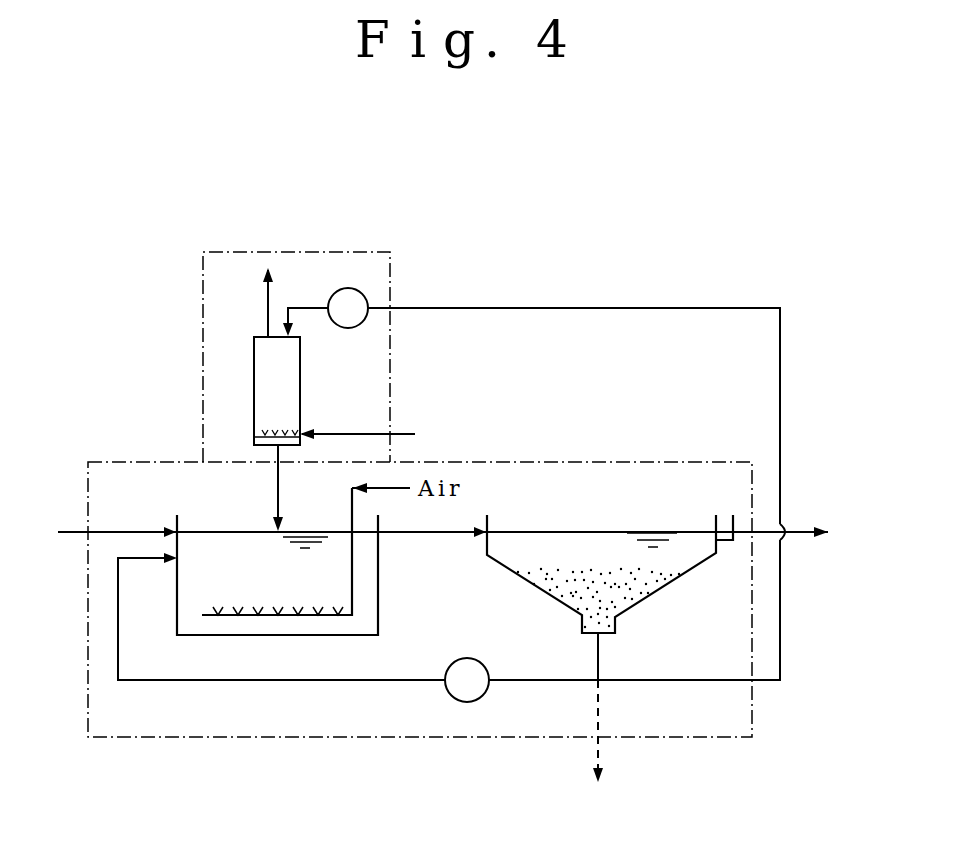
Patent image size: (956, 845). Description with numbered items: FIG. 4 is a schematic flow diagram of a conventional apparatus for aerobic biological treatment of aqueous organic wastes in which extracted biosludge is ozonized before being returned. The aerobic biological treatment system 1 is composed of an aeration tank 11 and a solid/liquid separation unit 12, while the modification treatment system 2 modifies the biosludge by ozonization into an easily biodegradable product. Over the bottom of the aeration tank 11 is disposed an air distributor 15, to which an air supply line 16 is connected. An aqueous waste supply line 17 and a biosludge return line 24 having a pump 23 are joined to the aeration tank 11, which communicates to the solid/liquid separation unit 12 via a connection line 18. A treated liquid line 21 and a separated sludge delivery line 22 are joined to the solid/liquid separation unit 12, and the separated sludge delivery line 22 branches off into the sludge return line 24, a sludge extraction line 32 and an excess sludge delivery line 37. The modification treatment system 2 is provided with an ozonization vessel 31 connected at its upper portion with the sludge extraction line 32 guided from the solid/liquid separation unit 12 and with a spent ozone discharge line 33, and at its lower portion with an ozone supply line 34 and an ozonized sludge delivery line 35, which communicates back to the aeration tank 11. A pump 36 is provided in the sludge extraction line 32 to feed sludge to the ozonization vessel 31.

The aerobic biological treatment system 1 is at (390, 737).
The modification treatment system 2 is at (203, 290).
The aeration tank 11 is at (379, 615).
The solid/liquid separation unit 12 is at (665, 587).
The air distributor 15 is at (277, 615).
The air supply line 16 is at (353, 570).
The aqueous waste supply line 17 is at (126, 532).
The connection line 18 is at (470, 532).
The treated liquid line 21 is at (800, 532).
The separated sludge delivery line 22 is at (600, 653).
The pump 23 is at (485, 665).
The biosludge return line 24 is at (118, 655).
The ozonization vessel 31 is at (300, 363).
The sludge extraction line 32 is at (512, 308).
The spent ozone discharge line 33 is at (268, 306).
The ozone supply line 34 is at (345, 434).
The ozonized sludge delivery line 35 is at (278, 488).
The pump 36 is at (348, 288).
The excess sludge delivery line 37 is at (600, 705).